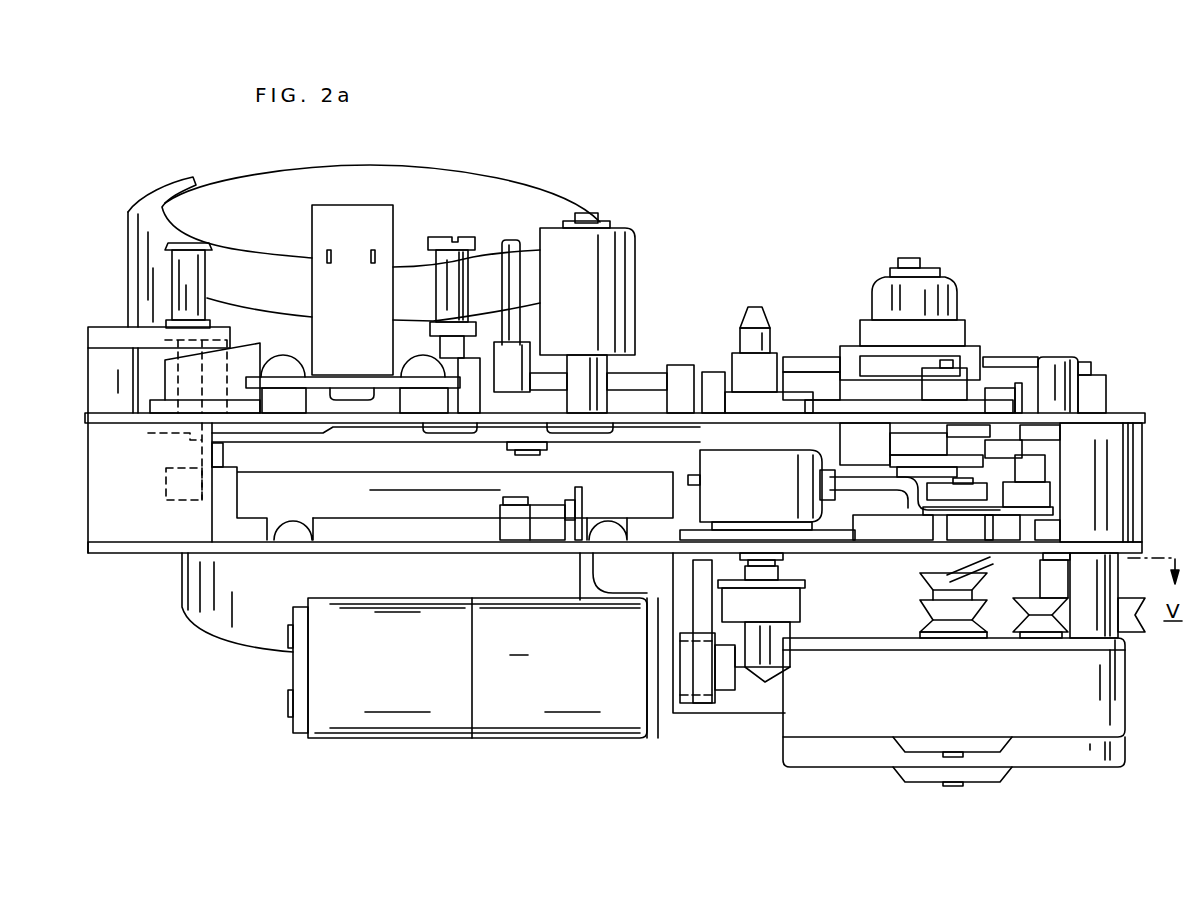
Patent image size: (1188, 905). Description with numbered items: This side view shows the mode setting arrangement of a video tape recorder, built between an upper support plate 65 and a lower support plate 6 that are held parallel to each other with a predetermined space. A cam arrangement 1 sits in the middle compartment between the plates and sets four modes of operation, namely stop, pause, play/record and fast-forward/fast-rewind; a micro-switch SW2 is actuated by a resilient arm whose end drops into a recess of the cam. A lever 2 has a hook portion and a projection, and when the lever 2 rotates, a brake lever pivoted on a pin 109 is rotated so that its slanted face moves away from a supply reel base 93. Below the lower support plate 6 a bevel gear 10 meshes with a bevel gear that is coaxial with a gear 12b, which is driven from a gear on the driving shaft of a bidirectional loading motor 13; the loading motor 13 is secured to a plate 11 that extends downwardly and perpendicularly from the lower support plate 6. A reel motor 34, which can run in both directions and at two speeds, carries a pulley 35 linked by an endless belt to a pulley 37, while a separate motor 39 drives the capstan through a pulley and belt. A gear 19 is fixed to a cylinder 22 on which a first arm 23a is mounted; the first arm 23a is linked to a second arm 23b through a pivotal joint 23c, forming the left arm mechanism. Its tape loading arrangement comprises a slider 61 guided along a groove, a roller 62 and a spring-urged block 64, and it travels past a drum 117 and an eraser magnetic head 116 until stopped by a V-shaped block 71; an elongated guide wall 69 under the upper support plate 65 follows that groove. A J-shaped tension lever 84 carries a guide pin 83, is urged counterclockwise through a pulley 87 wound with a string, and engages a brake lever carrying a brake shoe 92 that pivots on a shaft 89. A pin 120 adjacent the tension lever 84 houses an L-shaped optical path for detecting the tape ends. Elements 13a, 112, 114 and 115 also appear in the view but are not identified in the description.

The cam arrangement 1 is at (915, 437).
The lever 2 is at (1045, 505).
The lower support plate 6 is at (108, 552).
The bevel gear 10 is at (978, 574).
The plate 11 is at (663, 728).
The gear 12b is at (700, 607).
The loading motor 13 is at (558, 712).
The motor pulley 13a is at (700, 685).
The gear 19 is at (798, 535).
The cylinder 22 is at (765, 501).
The first arm 23a is at (660, 445).
The second arm 23b is at (328, 445).
The pivotal joint 23c is at (518, 450).
The reel motor 34 is at (870, 727).
The pulley 35 is at (950, 622).
The pulley 37 is at (1052, 622).
The motor 39 is at (1068, 755).
The slider 61 is at (160, 408).
The roller 62 is at (178, 266).
The block 64 is at (170, 373).
The upper support plate 65 is at (100, 420).
The elongated guide wall 69 is at (393, 500).
The V-shaped block 71 is at (148, 333).
The guide pin 83 is at (512, 240).
The tension lever 84 is at (640, 373).
The pulley 87 is at (782, 607).
The shaft 89 is at (950, 360).
The brake shoe 92 is at (895, 363).
The supply reel base 93 is at (845, 360).
The pin 109 is at (1050, 362).
The block 112 is at (683, 370).
The housing 114 is at (600, 248).
The adjusting screw 115 is at (462, 238).
The eraser magnetic head 116 is at (358, 222).
The drum 117 is at (470, 192).
The pin 120 is at (752, 307).
The micro-switch SW2 is at (543, 528).